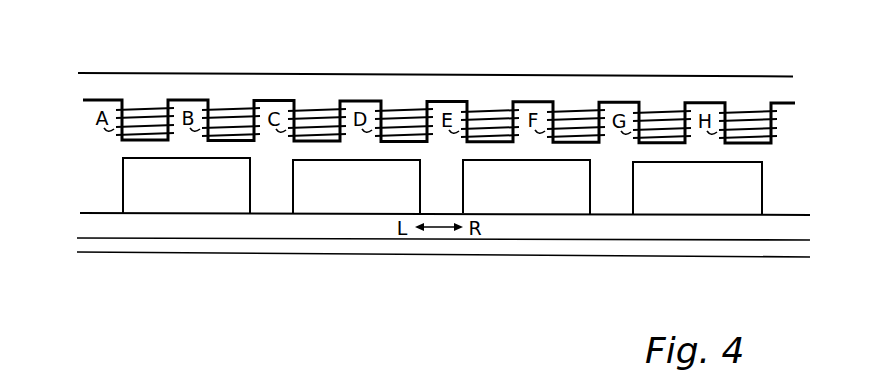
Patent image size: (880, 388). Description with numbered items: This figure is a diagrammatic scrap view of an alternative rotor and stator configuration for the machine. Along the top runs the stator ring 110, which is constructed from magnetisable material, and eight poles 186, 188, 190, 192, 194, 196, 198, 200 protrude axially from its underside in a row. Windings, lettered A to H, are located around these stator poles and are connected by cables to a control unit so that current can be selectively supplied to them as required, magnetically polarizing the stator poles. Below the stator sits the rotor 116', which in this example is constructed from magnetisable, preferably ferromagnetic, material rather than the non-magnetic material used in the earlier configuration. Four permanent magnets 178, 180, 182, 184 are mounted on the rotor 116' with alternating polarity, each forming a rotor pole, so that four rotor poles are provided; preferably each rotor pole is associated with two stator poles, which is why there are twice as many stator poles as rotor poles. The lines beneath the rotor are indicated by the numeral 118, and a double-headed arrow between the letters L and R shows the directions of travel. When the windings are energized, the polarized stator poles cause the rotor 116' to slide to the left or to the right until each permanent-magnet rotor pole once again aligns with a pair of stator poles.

The stator ring 110 is at (94, 73).
The stator pole 186 is at (143, 100).
The stator pole 188 is at (220, 100).
The stator pole 190 is at (323, 101).
The stator pole 192 is at (397, 101).
The stator pole 194 is at (488, 102).
The stator pole 196 is at (577, 102).
The stator pole 198 is at (667, 103).
The stator pole 200 is at (747, 103).
The rotor 116' is at (425, 186).
The permanent magnet 178 is at (153, 195).
The permanent magnet 180 is at (322, 198).
The permanent magnet 182 is at (498, 198).
The permanent magnet 184 is at (738, 198).
The track rails 118 is at (597, 248).